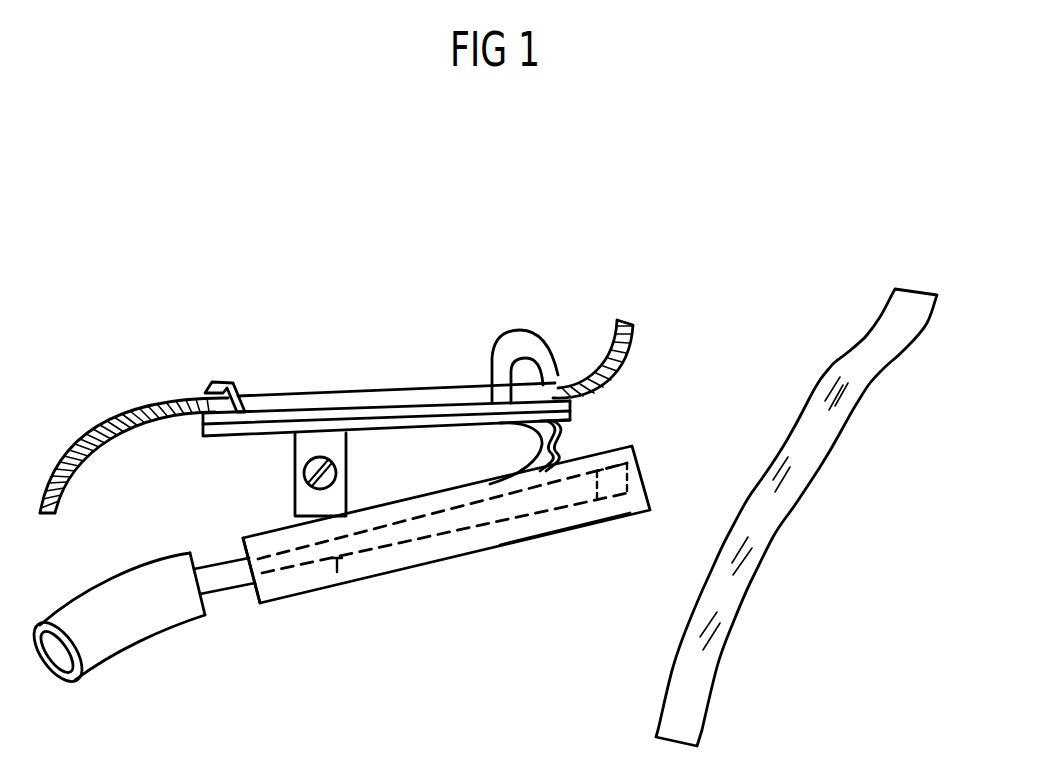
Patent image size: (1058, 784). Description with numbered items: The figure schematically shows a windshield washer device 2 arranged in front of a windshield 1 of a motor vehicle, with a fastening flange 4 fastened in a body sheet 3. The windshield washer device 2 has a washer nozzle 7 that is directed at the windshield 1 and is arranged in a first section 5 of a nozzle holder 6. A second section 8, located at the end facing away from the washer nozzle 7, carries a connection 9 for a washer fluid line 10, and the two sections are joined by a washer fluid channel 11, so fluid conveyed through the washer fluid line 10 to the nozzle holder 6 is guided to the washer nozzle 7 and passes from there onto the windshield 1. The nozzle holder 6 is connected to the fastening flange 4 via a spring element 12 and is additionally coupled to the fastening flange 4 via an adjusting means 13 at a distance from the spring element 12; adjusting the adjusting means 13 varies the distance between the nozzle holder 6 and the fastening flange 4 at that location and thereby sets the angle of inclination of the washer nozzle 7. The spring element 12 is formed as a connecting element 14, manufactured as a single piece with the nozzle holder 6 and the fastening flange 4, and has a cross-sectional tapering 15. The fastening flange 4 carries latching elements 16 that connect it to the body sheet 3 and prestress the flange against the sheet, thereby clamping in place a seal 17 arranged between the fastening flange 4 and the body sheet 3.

The windshield 1 is at (810, 423).
The windshield washer device 2 is at (448, 576).
The body sheet 3 is at (121, 418).
The fastening flange 4 is at (378, 408).
The first section 5 is at (547, 543).
The nozzle holder 6 is at (398, 560).
The washer nozzle 7 is at (617, 508).
The second section 8 is at (274, 606).
The connection 9 is at (223, 580).
The washer fluid line 10 is at (125, 628).
The washer fluid channel 11 is at (343, 583).
The spring element 12 is at (570, 432).
The adjusting means 13 is at (311, 443).
The connecting element 14 is at (538, 438).
The cross-sectional tapering 15 is at (560, 442).
The latching elements 16 is at (216, 384).
The seal 17 is at (415, 408).